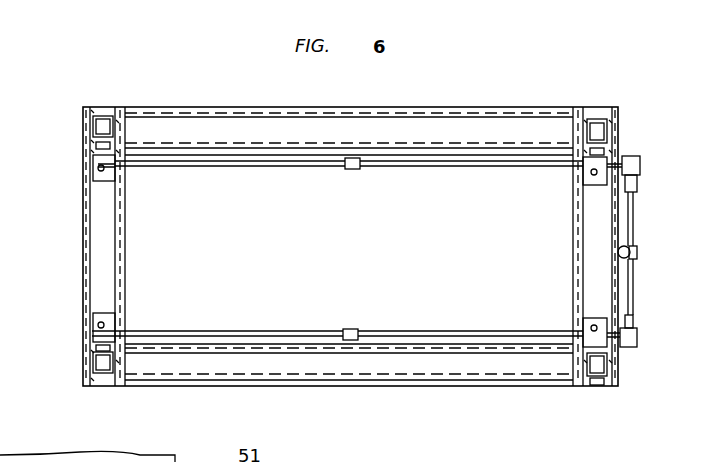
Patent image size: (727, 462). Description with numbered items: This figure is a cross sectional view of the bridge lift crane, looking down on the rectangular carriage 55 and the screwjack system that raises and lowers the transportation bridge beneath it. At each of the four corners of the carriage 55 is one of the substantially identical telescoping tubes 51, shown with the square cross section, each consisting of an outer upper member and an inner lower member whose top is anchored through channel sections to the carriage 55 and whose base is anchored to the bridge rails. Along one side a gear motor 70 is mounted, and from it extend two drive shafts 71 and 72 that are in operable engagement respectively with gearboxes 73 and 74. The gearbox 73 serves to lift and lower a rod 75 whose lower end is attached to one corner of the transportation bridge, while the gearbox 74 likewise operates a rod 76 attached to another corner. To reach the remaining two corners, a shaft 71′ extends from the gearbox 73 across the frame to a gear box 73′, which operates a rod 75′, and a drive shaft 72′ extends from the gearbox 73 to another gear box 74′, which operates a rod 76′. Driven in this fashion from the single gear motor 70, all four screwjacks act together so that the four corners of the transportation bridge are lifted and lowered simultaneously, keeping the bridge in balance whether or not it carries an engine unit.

The telescoping tube 51 is at (108, 100).
The carriage 55 is at (470, 102).
The gear motor 70 is at (638, 252).
The drive shaft 71 is at (633, 293).
The drive shaft 72 is at (633, 217).
The gearbox 73 is at (638, 333).
The gearbox 74 is at (641, 167).
The rod 75 is at (590, 327).
The rod 76 is at (591, 173).
The shaft 71′ is at (279, 318).
The drive shaft 72′ is at (242, 167).
The gear box 73′ is at (92, 330).
The gear box 74′ is at (98, 166).
The rod 75′ is at (98, 323).
The rod 76′ is at (99, 169).